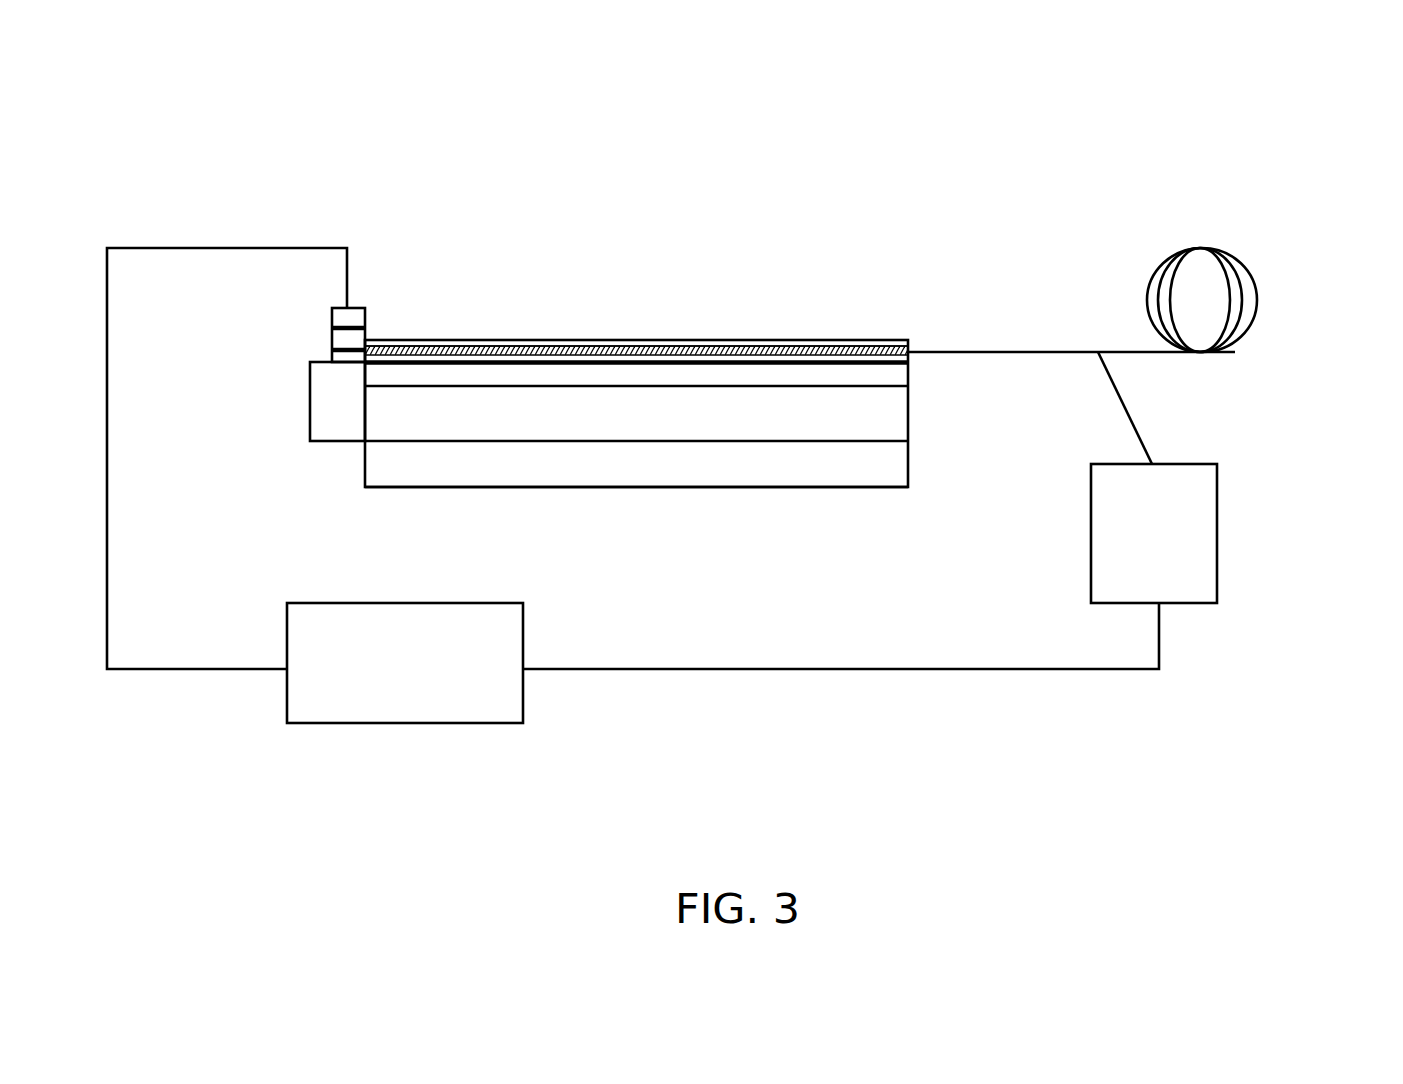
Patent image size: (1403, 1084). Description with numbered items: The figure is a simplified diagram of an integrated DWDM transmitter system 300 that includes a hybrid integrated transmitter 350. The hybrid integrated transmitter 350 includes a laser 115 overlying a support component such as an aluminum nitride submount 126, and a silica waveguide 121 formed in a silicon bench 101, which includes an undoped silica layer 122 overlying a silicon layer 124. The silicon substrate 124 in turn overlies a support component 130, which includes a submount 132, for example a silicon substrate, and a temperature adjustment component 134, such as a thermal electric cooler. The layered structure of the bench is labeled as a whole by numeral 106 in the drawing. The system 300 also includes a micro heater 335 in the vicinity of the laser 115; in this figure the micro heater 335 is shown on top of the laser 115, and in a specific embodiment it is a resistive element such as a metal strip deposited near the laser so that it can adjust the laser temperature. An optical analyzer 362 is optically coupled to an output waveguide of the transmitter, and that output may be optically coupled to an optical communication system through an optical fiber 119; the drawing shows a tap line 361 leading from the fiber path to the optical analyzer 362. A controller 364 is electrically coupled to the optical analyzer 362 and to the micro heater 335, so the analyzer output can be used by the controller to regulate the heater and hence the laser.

The integrated transmitter system 300 is at (1218, 126).
The hybrid integrated transmitter 350 is at (740, 205).
The silicon bench 101 is at (897, 289).
The waveguide structure 106 is at (572, 340).
The silica waveguide 121 is at (595, 353).
The undoped silica layer 122 is at (707, 342).
The silicon layer 124 is at (872, 374).
The support component 130 is at (688, 481).
The submount 132 is at (769, 430).
The temperature adjustment component 134 is at (638, 465).
The submount 126 is at (322, 394).
The laser 115 is at (322, 333).
The micro heater 335 is at (347, 303).
The optical fiber 119 is at (1130, 272).
The fiber tap 361 is at (1148, 406).
The optical analyzer 362 is at (1188, 572).
The controller 364 is at (441, 689).